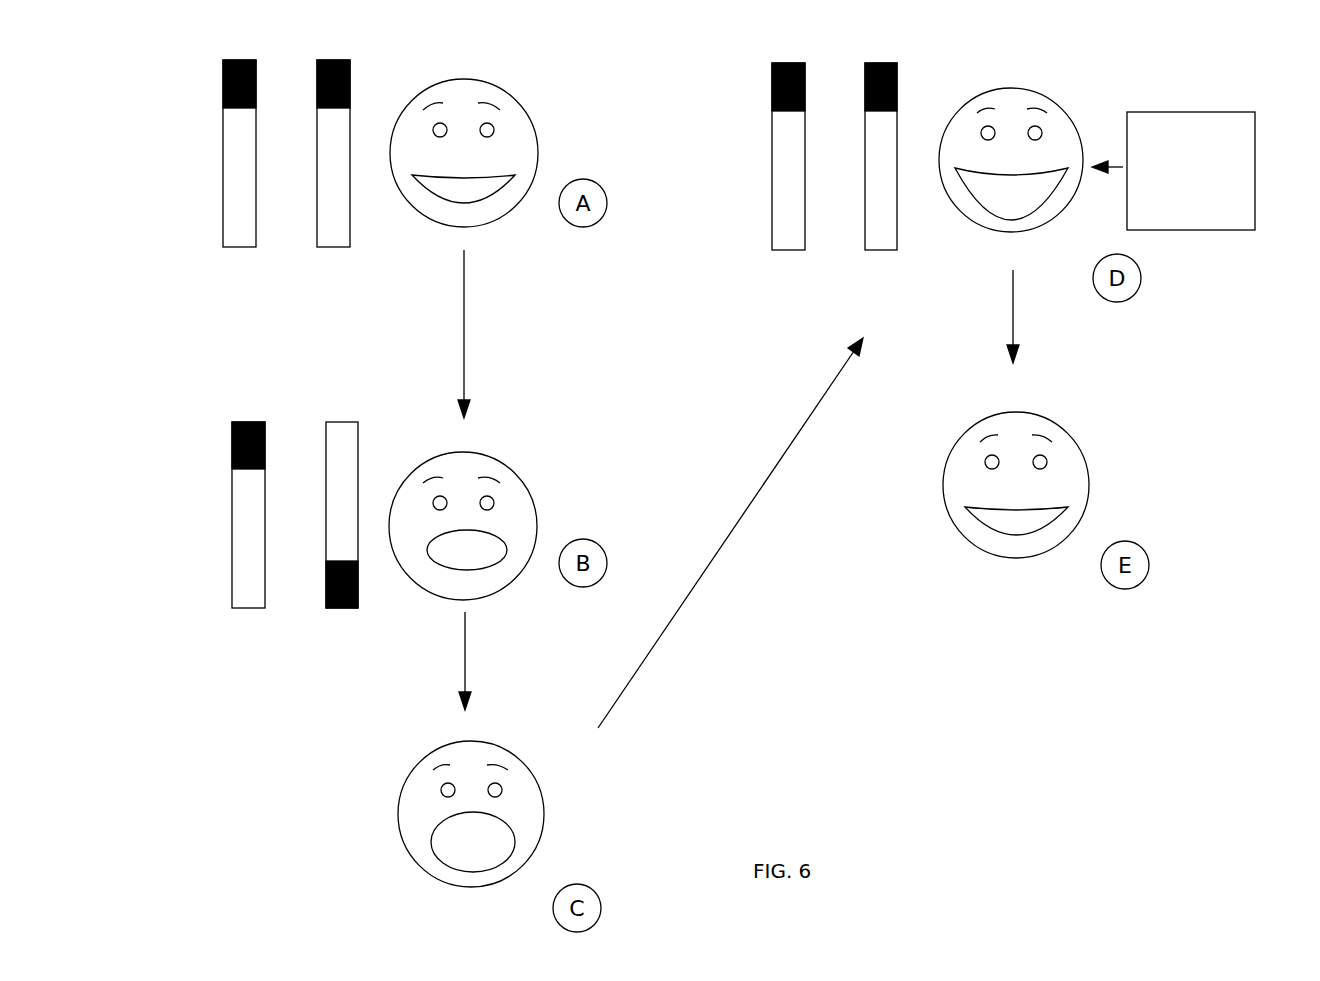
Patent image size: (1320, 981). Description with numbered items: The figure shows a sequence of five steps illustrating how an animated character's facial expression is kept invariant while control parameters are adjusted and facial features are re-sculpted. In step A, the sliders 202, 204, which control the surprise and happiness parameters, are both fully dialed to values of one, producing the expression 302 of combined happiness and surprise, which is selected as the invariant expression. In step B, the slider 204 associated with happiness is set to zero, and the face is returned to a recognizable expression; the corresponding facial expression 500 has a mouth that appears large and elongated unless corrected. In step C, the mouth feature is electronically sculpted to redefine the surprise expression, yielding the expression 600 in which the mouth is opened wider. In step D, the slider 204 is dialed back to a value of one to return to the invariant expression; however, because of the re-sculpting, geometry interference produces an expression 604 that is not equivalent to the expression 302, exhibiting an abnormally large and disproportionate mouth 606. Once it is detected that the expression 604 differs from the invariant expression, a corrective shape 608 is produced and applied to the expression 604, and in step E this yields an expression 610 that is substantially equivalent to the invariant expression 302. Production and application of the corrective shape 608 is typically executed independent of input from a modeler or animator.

The slider 202 is at (217, 278).
The slider 204 is at (318, 278).
The facial expression 302 is at (525, 113).
The facial expression 500 is at (507, 467).
The expression 600 is at (515, 755).
The expression 604 is at (1029, 177).
The mouth 606 is at (988, 213).
The corrective shape 608 is at (1207, 112).
The expression 610 is at (1078, 442).